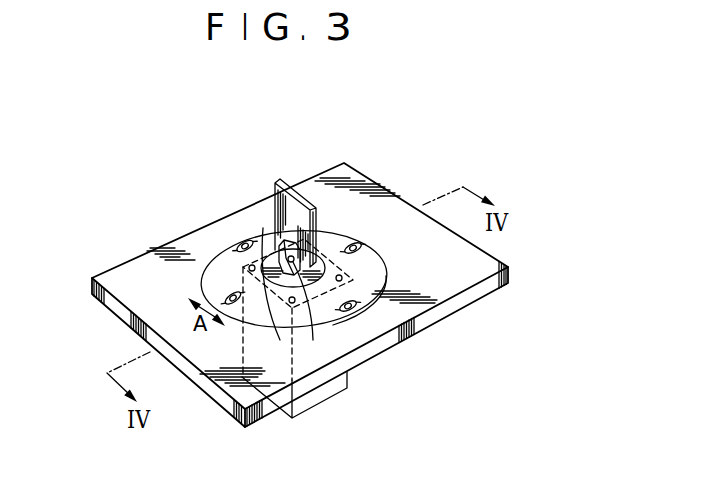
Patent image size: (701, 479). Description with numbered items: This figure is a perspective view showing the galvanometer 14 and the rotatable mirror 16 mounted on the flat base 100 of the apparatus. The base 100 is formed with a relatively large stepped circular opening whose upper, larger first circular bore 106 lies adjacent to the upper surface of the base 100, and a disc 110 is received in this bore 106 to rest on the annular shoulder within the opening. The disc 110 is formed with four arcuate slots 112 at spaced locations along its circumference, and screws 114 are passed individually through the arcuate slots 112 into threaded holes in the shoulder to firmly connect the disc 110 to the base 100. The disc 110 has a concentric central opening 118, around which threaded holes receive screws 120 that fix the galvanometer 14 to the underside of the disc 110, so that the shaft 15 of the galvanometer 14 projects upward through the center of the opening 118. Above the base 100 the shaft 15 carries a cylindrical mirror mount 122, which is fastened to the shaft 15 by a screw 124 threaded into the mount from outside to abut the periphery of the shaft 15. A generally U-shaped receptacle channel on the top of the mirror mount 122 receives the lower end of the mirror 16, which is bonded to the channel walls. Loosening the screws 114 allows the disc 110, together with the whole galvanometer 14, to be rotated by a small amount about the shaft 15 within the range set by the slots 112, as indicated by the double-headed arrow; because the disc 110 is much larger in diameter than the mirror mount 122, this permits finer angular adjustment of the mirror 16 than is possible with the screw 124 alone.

The galvanometer 14 is at (346, 391).
The shaft 15 is at (242, 270).
The mirror 16 is at (273, 187).
The base 100 is at (481, 300).
The first circular bore 106 is at (383, 252).
The disc 110 is at (377, 275).
The arcuate slots 112 is at (225, 294).
The screws 114 is at (353, 240).
The central opening 118 is at (320, 248).
The screws 120 is at (260, 322).
The mirror mount 122 is at (272, 243).
The screw 124 is at (312, 344).